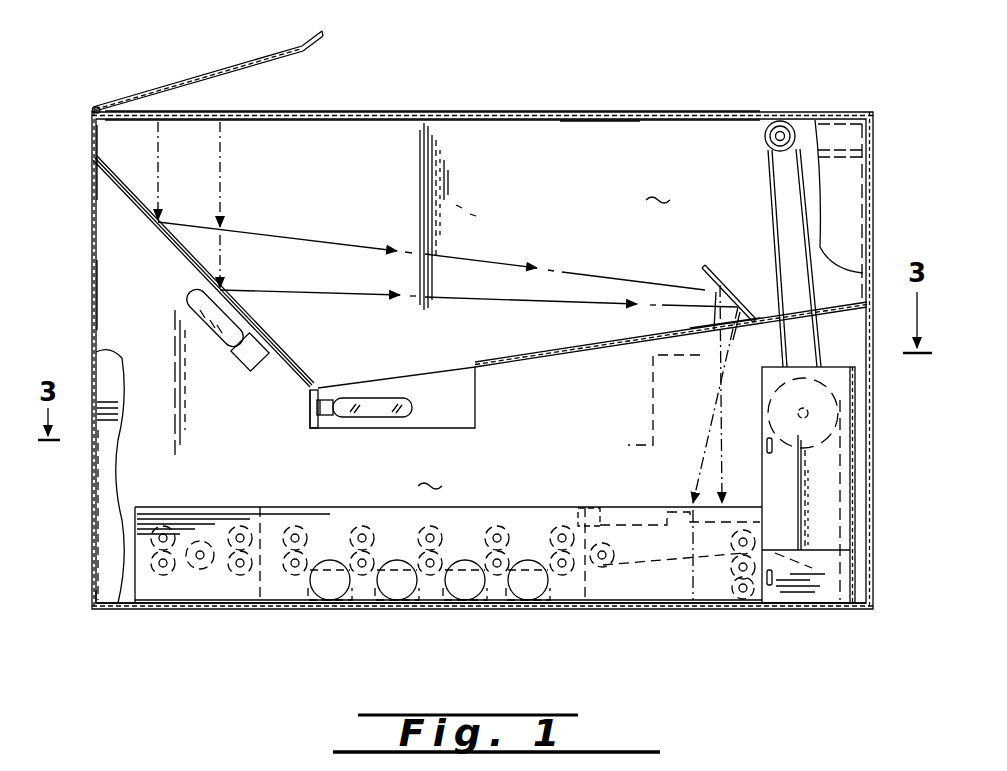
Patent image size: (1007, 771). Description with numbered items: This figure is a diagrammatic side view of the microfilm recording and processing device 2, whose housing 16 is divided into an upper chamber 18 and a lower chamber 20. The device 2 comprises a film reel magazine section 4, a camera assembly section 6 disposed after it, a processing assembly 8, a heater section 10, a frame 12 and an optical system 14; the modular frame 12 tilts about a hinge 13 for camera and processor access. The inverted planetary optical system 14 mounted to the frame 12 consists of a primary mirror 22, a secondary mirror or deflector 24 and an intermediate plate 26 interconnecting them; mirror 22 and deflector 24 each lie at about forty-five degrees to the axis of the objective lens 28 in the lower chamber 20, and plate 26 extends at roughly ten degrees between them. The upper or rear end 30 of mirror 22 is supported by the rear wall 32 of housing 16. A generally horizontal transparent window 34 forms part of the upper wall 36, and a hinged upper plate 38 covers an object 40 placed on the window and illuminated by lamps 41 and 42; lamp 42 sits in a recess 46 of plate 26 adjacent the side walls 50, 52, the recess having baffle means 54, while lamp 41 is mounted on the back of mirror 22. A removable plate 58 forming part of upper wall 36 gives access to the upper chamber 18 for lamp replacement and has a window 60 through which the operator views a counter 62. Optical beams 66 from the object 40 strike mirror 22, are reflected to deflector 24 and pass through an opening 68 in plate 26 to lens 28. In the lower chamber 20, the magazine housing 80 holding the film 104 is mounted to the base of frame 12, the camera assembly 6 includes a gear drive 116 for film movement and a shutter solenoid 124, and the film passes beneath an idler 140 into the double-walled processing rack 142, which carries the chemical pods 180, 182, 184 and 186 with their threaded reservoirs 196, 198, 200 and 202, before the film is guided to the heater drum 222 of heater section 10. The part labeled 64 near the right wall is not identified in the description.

The device 2 is at (856, 104).
The film reel magazine section 4 is at (828, 455).
The camera assembly section 6 is at (748, 593).
The processing assembly 8 is at (490, 602).
The heater section 10 is at (220, 602).
The frame 12 is at (618, 605).
The hinge 13 is at (96, 598).
The optical system 14 is at (532, 240).
The housing 16 is at (92, 364).
The upper chamber 18 is at (657, 188).
The lower chamber 20 is at (428, 472).
The primary mirror 22 is at (140, 200).
The secondary mirror or deflector 24 is at (702, 268).
The intermediate plate 26 is at (610, 358).
The objective lens 28 is at (723, 602).
The upper or rear end of mirror 30 is at (92, 165).
The rear wall 32 is at (92, 292).
The transparent window 34 is at (273, 122).
The upper wall 36 is at (382, 122).
The hinged upper plate 38 is at (188, 80).
The object 40 is at (290, 110).
The lamp 41 is at (225, 352).
The lamp 42 is at (312, 412).
The recess 46 is at (382, 425).
The side wall 50 is at (98, 490).
The side wall 52 is at (597, 156).
The baffle means 54 is at (462, 391).
The removable plate 58 is at (470, 110).
The window 60 is at (776, 118).
The counter 62 is at (760, 136).
The right wall 64 is at (874, 546).
The optical beams 66 is at (265, 290).
The opening 68 is at (696, 327).
The magazine housing 80 is at (830, 482).
The film 104 is at (830, 413).
The gear drive 116 is at (760, 608).
The solenoid 124 is at (630, 506).
The idler 140 is at (571, 505).
The processing rack 142 is at (530, 505).
The chemical pod 180 is at (520, 602).
The chemical pod 182 is at (440, 607).
The chemical pod 184 is at (380, 600).
The chemical pod 186 is at (313, 600).
The reservoir 196 is at (535, 586).
The reservoir 198 is at (460, 562).
The reservoir 200 is at (378, 583).
The reservoir 202 is at (310, 583).
The heater drum 222 is at (193, 573).